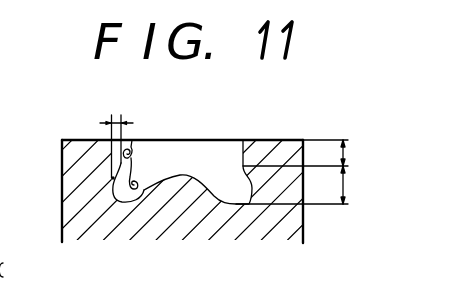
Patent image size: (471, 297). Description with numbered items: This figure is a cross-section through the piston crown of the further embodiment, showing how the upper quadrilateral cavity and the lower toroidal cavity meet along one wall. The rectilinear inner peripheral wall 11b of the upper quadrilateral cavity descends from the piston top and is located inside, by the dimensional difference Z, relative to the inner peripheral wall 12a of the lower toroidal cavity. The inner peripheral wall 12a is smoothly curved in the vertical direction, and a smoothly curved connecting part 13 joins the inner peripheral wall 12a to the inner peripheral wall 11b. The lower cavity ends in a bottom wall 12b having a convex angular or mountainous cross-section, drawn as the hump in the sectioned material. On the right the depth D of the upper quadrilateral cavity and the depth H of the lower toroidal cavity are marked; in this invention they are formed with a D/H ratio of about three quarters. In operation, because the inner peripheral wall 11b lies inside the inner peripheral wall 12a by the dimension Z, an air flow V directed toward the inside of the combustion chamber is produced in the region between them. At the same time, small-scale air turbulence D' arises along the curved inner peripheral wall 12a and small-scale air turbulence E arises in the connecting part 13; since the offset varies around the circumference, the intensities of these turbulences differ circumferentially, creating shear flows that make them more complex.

The inner peripheral wall of the upper quadrilateral cavity 11b is at (132, 140).
The inner peripheral wall of the lower toroidal cavity 12a is at (114, 203).
The bottom wall 12b is at (160, 187).
The connecting part 13 is at (112, 178).
The dimensional difference Z is at (116, 110).
The air turbulence D' is at (151, 148).
The air flow V is at (136, 169).
The air turbulence E is at (137, 203).
The depth of the upper quadrilateral cavity D is at (303, 153).
The depth of the lower toroidal cavity H is at (300, 185).